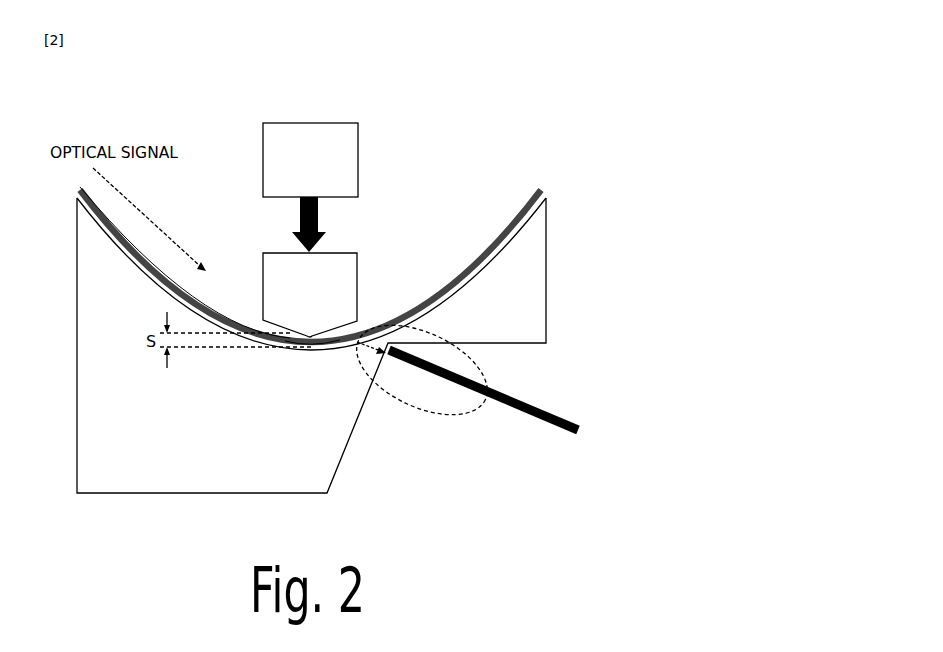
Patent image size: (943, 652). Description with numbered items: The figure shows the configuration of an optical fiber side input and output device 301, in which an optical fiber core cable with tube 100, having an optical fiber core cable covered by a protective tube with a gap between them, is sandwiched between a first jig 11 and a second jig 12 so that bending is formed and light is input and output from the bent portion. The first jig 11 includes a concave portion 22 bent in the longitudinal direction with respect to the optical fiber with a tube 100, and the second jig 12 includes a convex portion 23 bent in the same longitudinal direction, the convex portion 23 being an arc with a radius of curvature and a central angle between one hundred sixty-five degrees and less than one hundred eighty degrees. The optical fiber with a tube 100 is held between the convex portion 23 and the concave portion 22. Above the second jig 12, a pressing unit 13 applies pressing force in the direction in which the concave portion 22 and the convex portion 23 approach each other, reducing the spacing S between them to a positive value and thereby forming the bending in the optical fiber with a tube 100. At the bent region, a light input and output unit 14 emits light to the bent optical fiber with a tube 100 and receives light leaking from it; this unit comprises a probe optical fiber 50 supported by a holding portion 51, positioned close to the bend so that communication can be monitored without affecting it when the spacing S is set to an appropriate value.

The optical fiber side input and output device 301 is at (219, 106).
The optical fiber core cable with tube 100 is at (80, 190).
The first jig 11 is at (77, 263).
The second jig 12 is at (339, 253).
The pressing unit 13 is at (303, 123).
The light input and output unit 14 is at (420, 408).
The concave portion 22 is at (177, 285).
The convex portion 23 is at (310, 336).
The probe optical fiber 50 is at (469, 391).
The holding portion 51 is at (385, 356).